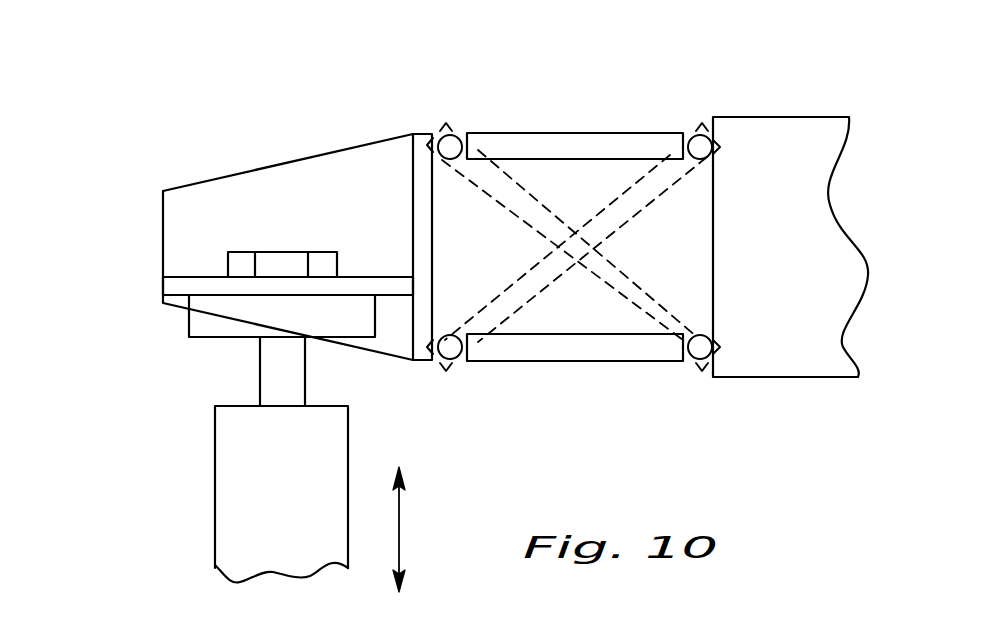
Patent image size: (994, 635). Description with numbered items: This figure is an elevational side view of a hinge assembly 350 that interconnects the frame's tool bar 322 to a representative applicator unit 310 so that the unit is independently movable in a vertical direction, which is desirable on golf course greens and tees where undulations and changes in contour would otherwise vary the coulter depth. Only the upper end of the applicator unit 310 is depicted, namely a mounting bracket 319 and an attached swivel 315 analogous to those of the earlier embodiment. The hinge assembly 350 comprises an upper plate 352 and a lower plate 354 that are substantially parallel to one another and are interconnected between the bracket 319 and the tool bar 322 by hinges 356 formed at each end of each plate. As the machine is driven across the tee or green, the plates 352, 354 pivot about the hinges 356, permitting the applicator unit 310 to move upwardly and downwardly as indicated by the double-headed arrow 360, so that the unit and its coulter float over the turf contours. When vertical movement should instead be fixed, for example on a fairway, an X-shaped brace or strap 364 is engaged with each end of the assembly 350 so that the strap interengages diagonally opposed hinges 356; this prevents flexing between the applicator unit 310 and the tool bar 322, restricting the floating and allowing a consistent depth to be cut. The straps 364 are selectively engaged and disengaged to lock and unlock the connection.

The applicator unit 310 is at (137, 252).
The swivel 315 is at (215, 473).
The mounting bracket 319 is at (227, 175).
The tool bar 322 is at (810, 117).
The hinge assembly 350 is at (610, 222).
The upper plate 352 is at (602, 133).
The lower plate 354 is at (580, 363).
The hinge 356 is at (452, 140).
The double-headed arrow 360 is at (452, 517).
The X-shaped brace or strap 364 is at (643, 213).